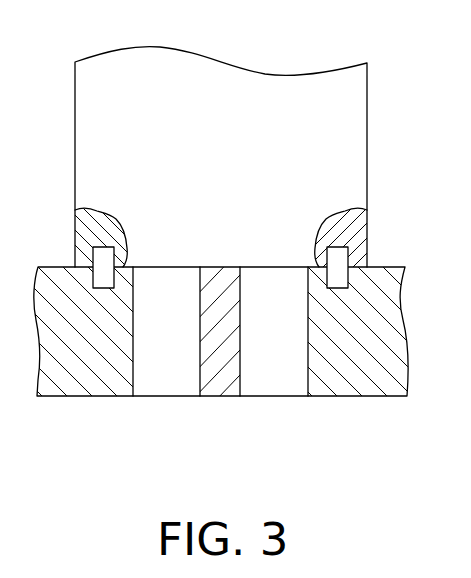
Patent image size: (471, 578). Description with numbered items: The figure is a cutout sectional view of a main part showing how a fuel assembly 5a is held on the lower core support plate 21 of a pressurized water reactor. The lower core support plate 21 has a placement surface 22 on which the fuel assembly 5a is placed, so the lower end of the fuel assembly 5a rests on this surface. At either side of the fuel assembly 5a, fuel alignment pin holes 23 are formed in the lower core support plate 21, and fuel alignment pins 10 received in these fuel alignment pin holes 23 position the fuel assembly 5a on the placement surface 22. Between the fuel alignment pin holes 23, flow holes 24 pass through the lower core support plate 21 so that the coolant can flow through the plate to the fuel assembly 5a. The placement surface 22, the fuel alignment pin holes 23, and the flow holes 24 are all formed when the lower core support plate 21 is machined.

The fuel assembly 5a is at (337, 122).
The fuel alignment pin 10 is at (108, 257).
The lower core support plate 21 is at (68, 396).
The placement surface 22 is at (222, 265).
The fuel alignment pin hole 23 is at (102, 288).
The flow hole 24 is at (180, 364).